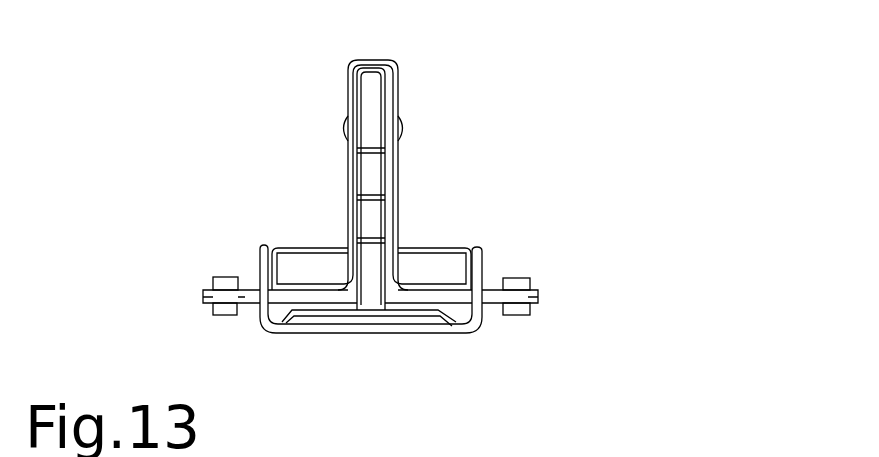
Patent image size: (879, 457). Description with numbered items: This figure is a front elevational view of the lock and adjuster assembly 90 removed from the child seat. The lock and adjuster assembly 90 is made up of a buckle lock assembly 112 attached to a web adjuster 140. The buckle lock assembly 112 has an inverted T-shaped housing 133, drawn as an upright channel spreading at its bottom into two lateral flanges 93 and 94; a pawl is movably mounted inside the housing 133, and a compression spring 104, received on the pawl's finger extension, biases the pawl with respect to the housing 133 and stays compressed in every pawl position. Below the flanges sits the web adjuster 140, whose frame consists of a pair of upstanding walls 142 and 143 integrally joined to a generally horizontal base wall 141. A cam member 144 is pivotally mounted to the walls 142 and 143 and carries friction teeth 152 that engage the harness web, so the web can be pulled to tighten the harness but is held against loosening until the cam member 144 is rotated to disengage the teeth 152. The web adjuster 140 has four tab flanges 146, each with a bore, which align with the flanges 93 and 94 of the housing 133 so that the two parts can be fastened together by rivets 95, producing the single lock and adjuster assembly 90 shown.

The lock and adjuster assembly 90 is at (416, 121).
The flange 93 is at (545, 290).
The flange 94 is at (197, 290).
The rivet 95 is at (200, 305).
The compression spring 104 is at (343, 128).
The buckle lock assembly 112 is at (355, 50).
The inverted T-shaped housing 133 is at (398, 75).
The web adjuster 140 is at (414, 342).
The base wall 141 is at (268, 333).
The upstanding wall 142 is at (484, 245).
The upstanding wall 143 is at (260, 245).
The cam member 144 is at (420, 248).
The tab flange 146 is at (218, 316).
The friction teeth 152 is at (282, 324).